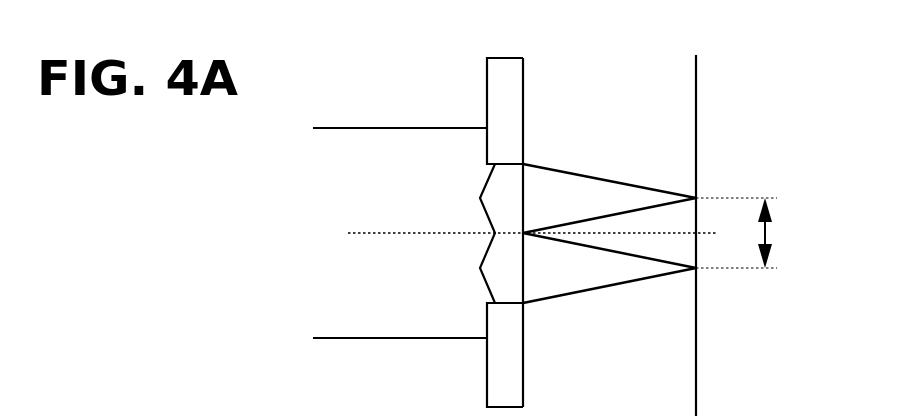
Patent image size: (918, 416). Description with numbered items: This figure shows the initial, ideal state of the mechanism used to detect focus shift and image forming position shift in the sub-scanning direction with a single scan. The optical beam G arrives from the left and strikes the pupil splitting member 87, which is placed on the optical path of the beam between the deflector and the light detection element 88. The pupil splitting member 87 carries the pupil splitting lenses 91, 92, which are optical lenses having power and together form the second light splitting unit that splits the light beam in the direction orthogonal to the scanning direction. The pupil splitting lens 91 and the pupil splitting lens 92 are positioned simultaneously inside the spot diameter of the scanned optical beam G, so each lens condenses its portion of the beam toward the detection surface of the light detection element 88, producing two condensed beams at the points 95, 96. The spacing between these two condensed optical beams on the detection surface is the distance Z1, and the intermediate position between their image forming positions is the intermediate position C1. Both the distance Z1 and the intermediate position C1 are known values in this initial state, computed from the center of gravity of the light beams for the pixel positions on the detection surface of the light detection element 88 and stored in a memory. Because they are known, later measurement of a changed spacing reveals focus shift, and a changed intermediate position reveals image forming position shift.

The pupil splitting member 87 is at (508, 57).
The light detection element 88 is at (696, 55).
The pupil splitting lens 91 is at (525, 188).
The pupil splitting lens 92 is at (524, 287).
The upper condensing point 95 is at (697, 197).
The lower condensing point 96 is at (697, 270).
The optical beam G is at (427, 127).
The intermediate position C1 is at (550, 234).
The distance between the two optical beams Z1 is at (780, 233).